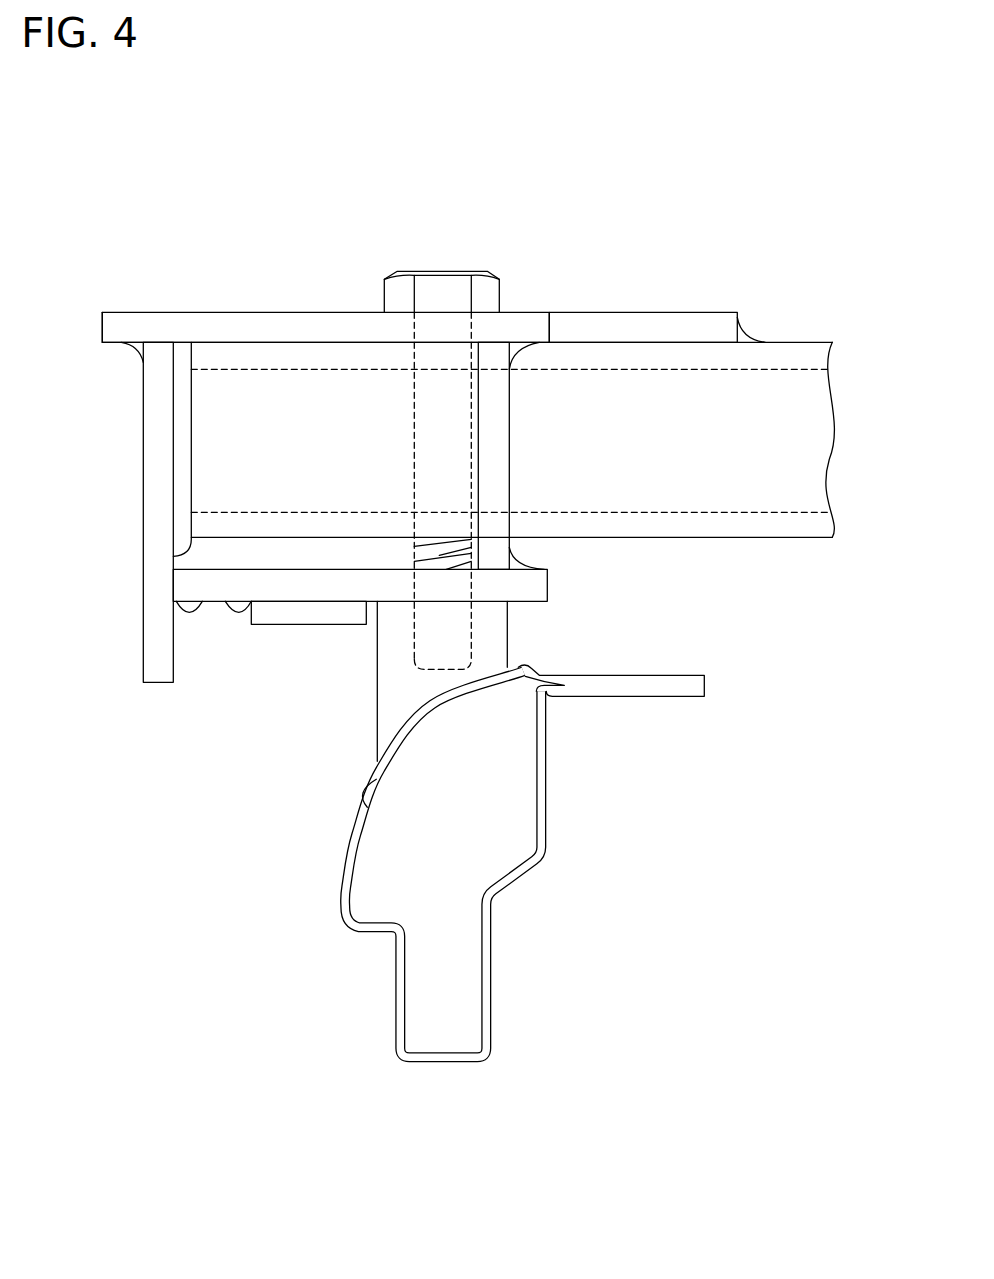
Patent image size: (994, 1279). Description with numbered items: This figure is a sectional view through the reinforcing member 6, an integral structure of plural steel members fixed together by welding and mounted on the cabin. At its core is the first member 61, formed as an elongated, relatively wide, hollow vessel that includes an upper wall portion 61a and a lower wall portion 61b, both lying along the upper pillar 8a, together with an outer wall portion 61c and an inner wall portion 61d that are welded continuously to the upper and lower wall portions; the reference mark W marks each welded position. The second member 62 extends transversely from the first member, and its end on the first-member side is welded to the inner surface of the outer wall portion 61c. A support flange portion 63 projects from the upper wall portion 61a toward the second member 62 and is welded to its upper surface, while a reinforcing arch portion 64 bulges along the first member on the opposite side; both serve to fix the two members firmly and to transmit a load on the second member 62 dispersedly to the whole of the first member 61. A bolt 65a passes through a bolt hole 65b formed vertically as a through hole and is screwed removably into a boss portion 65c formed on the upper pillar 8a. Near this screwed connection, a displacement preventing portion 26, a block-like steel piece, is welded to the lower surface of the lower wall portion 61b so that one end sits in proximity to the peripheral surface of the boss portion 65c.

The reinforcing member 6 is at (197, 213).
The first member 61 is at (136, 432).
The upper wall portion 61a is at (275, 313).
The lower wall portion 61b is at (549, 582).
The outer wall portion 61c is at (143, 500).
The inner wall portion 61d is at (512, 448).
The second member 62 is at (755, 548).
The support flange portion 63 is at (668, 313).
The reinforcing arch portion 64 is at (120, 313).
The bolt 65a is at (440, 272).
The bolt hole 65b is at (462, 318).
The boss portion 65c is at (378, 710).
The displacement preventing portion 26 is at (308, 625).
The upper pillar 8a is at (550, 800).
The welded position W is at (740, 342).